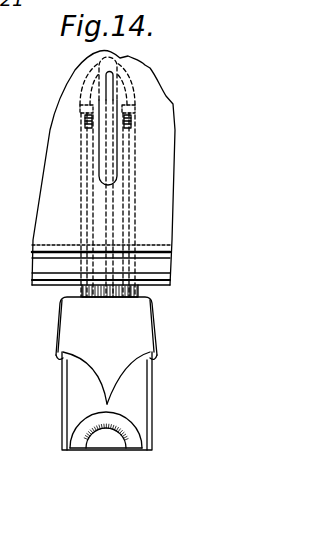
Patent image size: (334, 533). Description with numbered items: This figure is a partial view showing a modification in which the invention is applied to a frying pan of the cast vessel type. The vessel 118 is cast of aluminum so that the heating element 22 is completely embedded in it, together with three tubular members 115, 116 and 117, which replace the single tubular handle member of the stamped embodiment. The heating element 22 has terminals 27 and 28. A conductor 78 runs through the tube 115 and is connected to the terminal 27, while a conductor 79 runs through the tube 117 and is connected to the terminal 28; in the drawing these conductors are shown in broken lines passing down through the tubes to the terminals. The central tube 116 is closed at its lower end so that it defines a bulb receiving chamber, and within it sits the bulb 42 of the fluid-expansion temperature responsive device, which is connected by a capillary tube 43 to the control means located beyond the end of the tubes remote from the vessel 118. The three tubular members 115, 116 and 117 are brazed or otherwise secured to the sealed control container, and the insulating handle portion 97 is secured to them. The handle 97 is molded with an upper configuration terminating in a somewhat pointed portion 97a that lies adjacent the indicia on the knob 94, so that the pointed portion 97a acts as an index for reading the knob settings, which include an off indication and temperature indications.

The bulb 42 is at (123, 63).
The heating element 22 is at (75, 88).
The terminal 27 is at (135, 128).
The terminal 28 is at (86, 118).
The conductor 78 is at (125, 195).
The capillary tube 43 is at (107, 210).
The conductor 79 is at (82, 188).
The vessel 118 is at (32, 268).
The tubular member 115 is at (80, 289).
The tubular member 116 is at (110, 297).
The tubular member 117 is at (140, 291).
The insulating handle portion 97 is at (76, 385).
The pointed portion 97a is at (113, 392).
The knob 94 is at (78, 443).